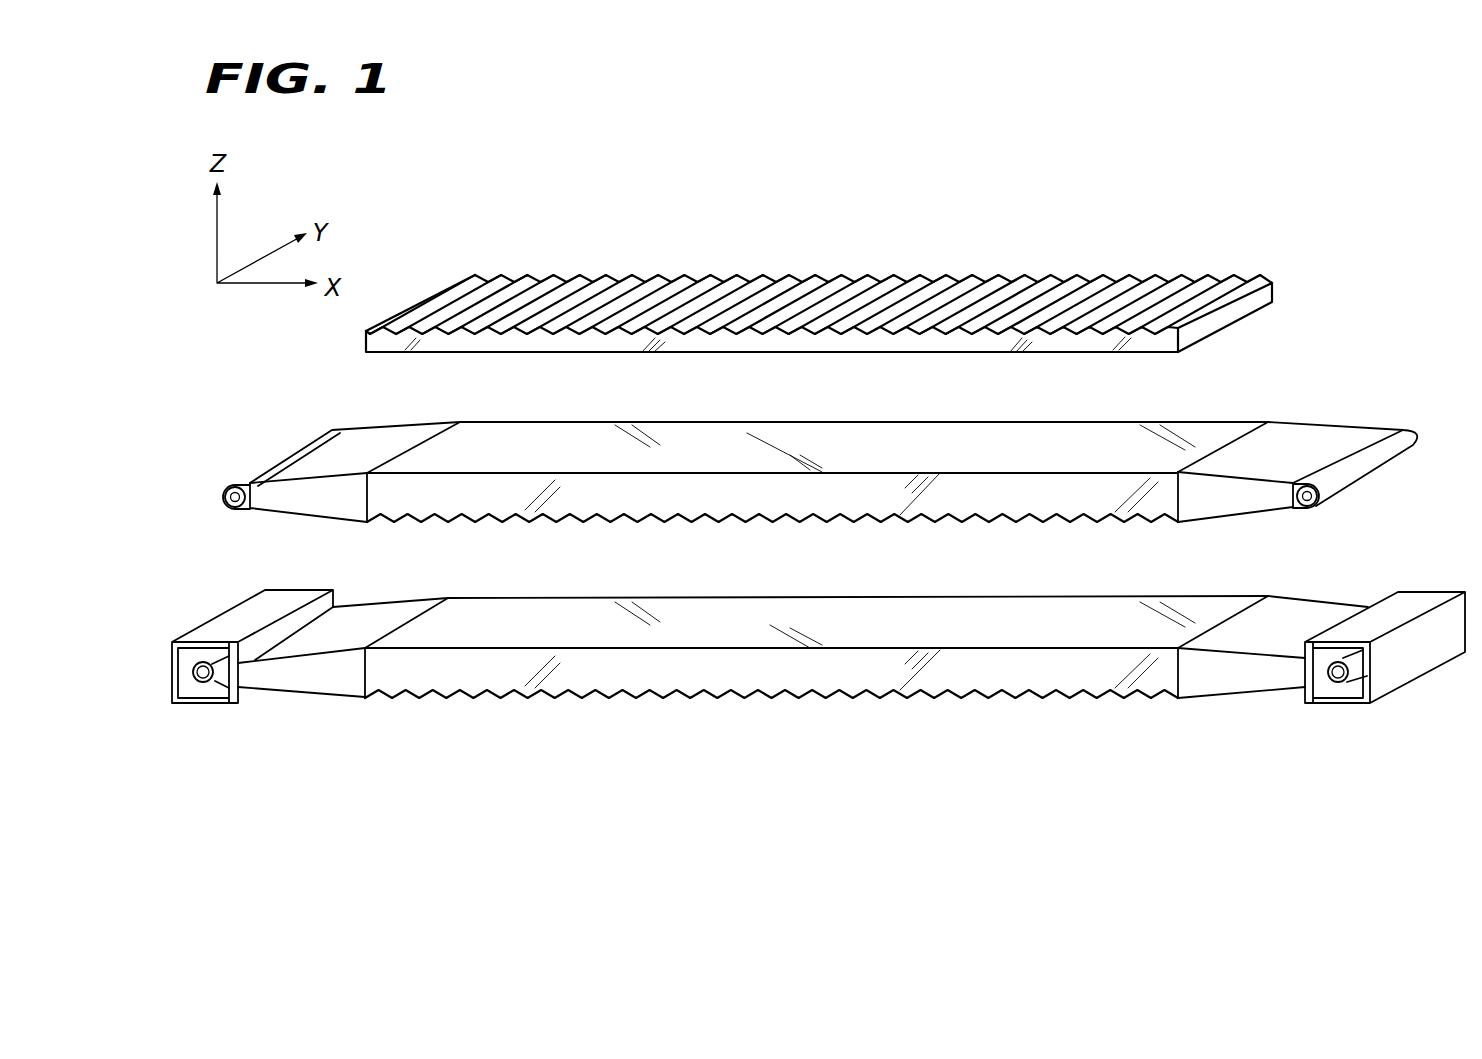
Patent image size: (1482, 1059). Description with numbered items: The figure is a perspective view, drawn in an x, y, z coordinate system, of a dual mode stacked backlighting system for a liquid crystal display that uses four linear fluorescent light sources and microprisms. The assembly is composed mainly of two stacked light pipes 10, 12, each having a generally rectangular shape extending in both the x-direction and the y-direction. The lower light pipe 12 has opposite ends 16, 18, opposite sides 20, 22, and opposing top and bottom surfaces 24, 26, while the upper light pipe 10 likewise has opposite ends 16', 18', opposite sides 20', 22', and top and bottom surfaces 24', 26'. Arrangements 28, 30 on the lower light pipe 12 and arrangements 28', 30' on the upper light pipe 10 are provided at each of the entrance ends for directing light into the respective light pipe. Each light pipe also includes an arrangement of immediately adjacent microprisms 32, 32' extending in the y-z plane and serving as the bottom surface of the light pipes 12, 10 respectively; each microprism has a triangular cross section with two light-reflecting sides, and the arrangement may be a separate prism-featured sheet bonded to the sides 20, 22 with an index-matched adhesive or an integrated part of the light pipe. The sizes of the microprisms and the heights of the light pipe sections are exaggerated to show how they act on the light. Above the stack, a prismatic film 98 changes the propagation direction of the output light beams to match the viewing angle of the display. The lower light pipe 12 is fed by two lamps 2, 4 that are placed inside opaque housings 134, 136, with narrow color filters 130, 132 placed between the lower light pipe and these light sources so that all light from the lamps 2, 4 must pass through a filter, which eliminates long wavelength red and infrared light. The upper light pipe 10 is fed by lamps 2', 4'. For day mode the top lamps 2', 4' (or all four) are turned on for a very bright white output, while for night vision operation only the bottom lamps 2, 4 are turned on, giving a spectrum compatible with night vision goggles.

The light source 2 is at (194, 709).
The light source 2' is at (215, 468).
The light source 4 is at (1341, 710).
The light source 4' is at (1342, 502).
The light pipe 10 is at (1345, 337).
The light pipe 12 is at (1043, 682).
The end 16 is at (288, 700).
The end 16' is at (295, 518).
The end 18 is at (1272, 703).
The end 18' is at (1248, 442).
The side 20 is at (462, 701).
The side 20' is at (463, 523).
The side 22 is at (858, 594).
The side 22' is at (864, 424).
The top surface 24 is at (771, 596).
The top surface 24' is at (772, 419).
The bottom surface 26 is at (967, 703).
The bottom surface 26' is at (1004, 527).
The light directing arrangement 28 is at (351, 602).
The light directing arrangement 28' is at (355, 437).
The light directing arrangement 30 is at (1318, 583).
The light directing arrangement 30' is at (1342, 448).
The arrangement of microprisms 32 is at (771, 724).
The arrangement of microprisms 32' is at (772, 550).
The prismatic film 98 is at (1218, 305).
The color filter 130 is at (218, 688).
The color filter 132 is at (1340, 688).
The opaque housing 134 is at (222, 615).
The opaque housing 136 is at (1422, 650).